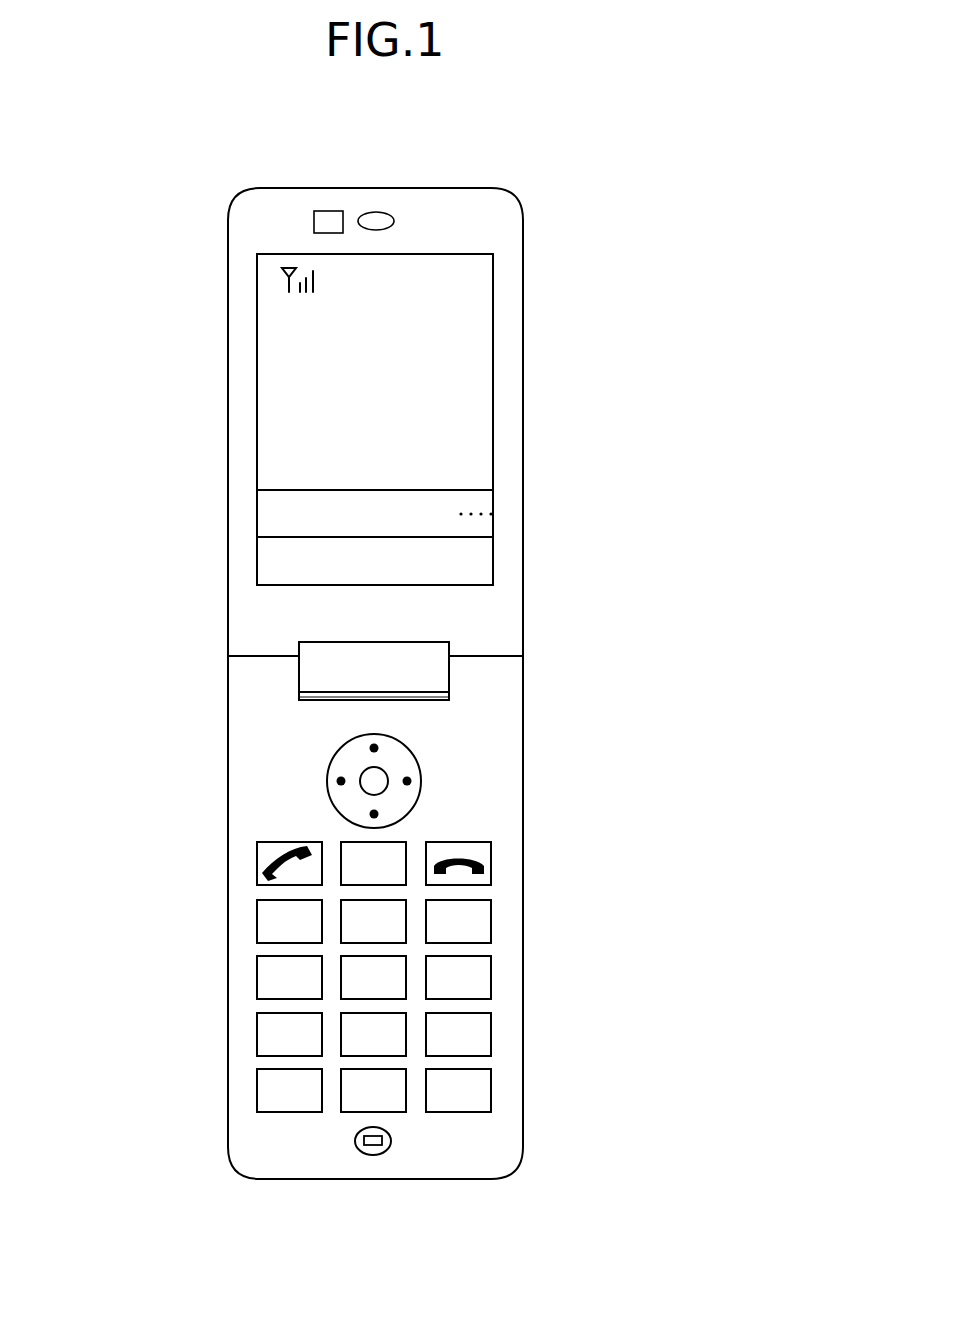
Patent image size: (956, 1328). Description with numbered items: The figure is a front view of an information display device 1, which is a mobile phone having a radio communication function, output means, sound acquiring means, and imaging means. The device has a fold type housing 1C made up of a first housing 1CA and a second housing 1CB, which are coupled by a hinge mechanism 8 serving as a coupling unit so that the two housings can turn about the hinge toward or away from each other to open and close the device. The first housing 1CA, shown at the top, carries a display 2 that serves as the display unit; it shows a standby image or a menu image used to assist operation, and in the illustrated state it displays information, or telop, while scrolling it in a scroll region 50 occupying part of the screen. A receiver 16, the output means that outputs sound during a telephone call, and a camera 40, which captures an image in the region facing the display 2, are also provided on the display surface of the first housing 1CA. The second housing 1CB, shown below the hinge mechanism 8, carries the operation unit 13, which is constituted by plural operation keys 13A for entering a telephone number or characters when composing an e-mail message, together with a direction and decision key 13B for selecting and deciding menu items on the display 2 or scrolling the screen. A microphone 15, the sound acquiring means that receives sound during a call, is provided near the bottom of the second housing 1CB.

The information display device 1 is at (557, 150).
The housing 1C is at (128, 600).
The first housing 1CA is at (277, 617).
The second housing 1CB is at (277, 743).
The display 2 is at (278, 318).
The camera 40 is at (322, 209).
The receiver 16 is at (377, 212).
The scroll region 50 is at (476, 503).
The hinge mechanism 8 is at (566, 653).
The operation unit 13 is at (620, 755).
The operation keys 13A is at (498, 838).
The direction and decision key 13B is at (407, 779).
The microphone 15 is at (372, 1152).